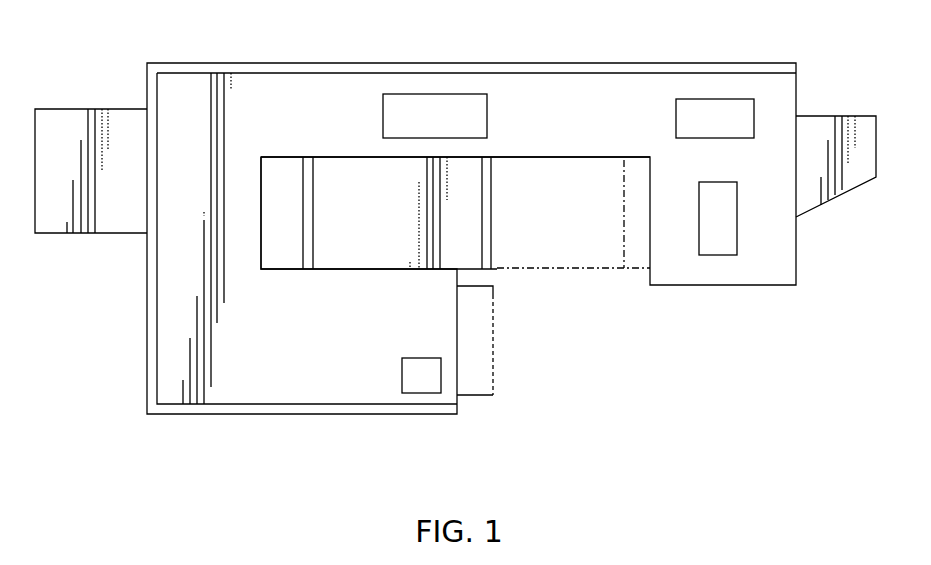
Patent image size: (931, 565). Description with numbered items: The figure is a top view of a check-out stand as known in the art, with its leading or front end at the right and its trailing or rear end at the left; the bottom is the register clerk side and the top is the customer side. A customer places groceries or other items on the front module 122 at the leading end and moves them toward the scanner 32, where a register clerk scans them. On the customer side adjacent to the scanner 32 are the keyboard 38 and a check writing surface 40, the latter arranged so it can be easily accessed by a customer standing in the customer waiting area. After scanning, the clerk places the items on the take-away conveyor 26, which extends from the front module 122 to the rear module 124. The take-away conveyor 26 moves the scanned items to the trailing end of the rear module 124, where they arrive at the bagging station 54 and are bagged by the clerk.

The rear module 124 is at (270, 88).
The bagging station 54 is at (64, 119).
The check writing surface 40 is at (418, 110).
The keyboard 38 is at (715, 110).
The take-away conveyor 26 is at (343, 193).
The scanner 32 is at (720, 243).
The front module 122 is at (780, 265).